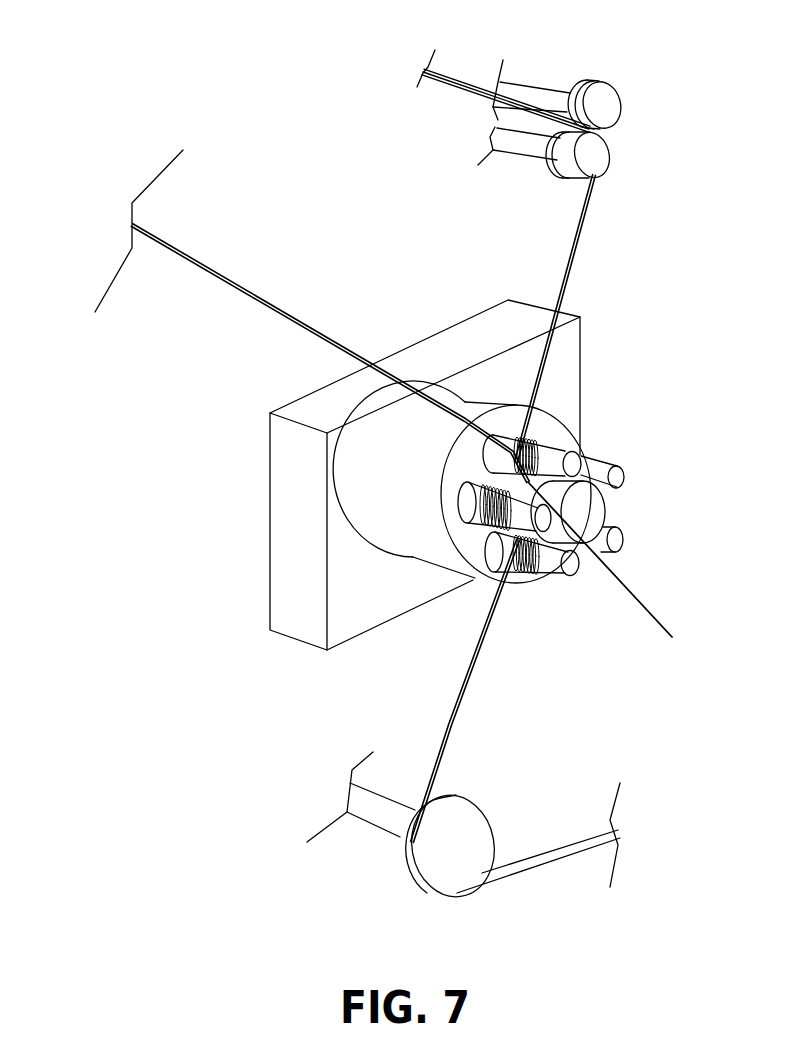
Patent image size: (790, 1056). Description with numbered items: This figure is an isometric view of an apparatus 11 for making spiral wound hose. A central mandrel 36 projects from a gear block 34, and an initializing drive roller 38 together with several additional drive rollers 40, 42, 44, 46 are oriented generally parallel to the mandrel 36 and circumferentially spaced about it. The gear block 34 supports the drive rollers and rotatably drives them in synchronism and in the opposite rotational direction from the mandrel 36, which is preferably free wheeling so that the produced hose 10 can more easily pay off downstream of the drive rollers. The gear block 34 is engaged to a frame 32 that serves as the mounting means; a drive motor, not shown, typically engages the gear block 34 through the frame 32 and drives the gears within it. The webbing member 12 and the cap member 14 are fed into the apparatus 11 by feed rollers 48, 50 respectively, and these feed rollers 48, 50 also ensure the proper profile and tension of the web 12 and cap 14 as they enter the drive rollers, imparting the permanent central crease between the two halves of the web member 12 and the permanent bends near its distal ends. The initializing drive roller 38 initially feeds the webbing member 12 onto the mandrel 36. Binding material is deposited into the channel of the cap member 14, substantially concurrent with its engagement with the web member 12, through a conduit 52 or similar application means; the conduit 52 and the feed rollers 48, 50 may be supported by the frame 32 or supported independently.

The hose 10 is at (613, 573).
The apparatus 11 is at (110, 80).
The webbing member 12 is at (468, 685).
The cap member 14 is at (568, 263).
The frame 32 is at (298, 461).
The gear block 34 is at (418, 507).
The central mandrel 36 is at (595, 510).
The initializing drive roller 38 is at (546, 522).
The additional drive roller 40 is at (573, 462).
The additional drive roller 42 is at (618, 477).
The additional drive roller 44 is at (618, 543).
The additional drive roller 46 is at (578, 570).
The feed roller 48 is at (417, 876).
The feed roller 50 is at (608, 85).
The conduit 52 is at (252, 290).